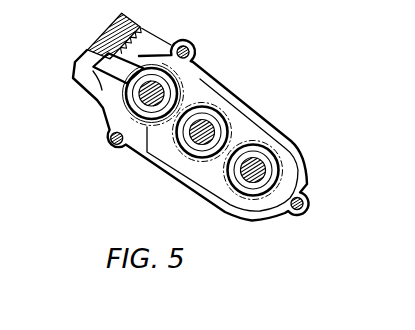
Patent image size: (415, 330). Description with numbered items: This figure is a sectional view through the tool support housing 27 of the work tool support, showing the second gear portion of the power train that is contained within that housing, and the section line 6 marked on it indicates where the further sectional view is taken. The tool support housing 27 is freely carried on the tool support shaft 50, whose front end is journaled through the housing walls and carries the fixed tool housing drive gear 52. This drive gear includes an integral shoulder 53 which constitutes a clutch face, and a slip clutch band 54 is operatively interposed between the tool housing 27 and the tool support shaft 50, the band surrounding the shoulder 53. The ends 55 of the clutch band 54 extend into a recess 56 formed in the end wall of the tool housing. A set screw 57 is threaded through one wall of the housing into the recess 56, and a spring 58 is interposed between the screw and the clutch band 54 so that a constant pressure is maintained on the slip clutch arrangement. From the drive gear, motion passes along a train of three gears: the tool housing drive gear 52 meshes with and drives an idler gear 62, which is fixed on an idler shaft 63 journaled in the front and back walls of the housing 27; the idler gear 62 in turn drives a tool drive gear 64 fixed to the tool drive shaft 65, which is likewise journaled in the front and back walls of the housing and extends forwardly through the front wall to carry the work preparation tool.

The section line 6— 6 is at (87, 48).
The tool support housing 27 is at (231, 91).
The tool support shaft 50 is at (106, 126).
The tool housing drive gear 52 is at (142, 150).
The shoulder 53 is at (152, 94).
The slip clutch band 54 is at (196, 64).
The ends of the clutch band 55 is at (143, 55).
The recess 56 is at (93, 62).
The set screw 57 is at (155, 27).
The spring 58 is at (110, 28).
The idler gear 62 is at (238, 110).
The idler shaft 63 is at (202, 132).
The tool drive gear 64 is at (282, 155).
The tool drive shaft 65 is at (253, 170).